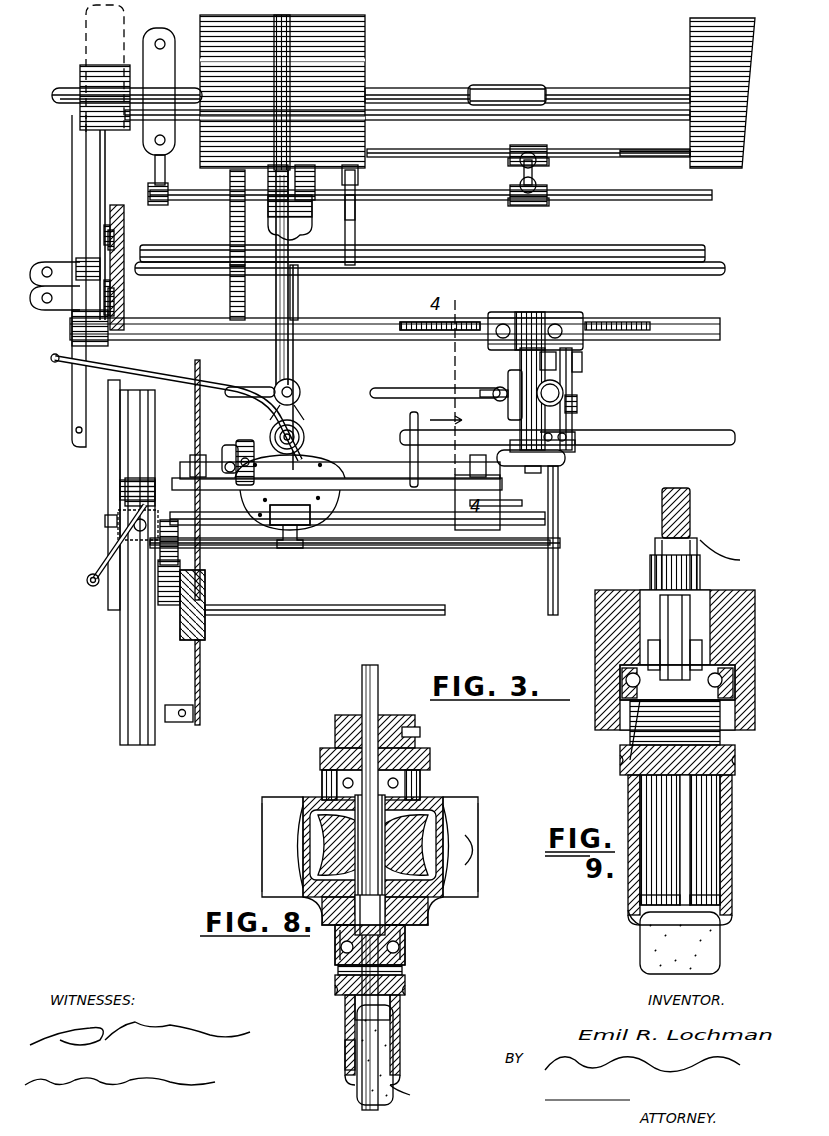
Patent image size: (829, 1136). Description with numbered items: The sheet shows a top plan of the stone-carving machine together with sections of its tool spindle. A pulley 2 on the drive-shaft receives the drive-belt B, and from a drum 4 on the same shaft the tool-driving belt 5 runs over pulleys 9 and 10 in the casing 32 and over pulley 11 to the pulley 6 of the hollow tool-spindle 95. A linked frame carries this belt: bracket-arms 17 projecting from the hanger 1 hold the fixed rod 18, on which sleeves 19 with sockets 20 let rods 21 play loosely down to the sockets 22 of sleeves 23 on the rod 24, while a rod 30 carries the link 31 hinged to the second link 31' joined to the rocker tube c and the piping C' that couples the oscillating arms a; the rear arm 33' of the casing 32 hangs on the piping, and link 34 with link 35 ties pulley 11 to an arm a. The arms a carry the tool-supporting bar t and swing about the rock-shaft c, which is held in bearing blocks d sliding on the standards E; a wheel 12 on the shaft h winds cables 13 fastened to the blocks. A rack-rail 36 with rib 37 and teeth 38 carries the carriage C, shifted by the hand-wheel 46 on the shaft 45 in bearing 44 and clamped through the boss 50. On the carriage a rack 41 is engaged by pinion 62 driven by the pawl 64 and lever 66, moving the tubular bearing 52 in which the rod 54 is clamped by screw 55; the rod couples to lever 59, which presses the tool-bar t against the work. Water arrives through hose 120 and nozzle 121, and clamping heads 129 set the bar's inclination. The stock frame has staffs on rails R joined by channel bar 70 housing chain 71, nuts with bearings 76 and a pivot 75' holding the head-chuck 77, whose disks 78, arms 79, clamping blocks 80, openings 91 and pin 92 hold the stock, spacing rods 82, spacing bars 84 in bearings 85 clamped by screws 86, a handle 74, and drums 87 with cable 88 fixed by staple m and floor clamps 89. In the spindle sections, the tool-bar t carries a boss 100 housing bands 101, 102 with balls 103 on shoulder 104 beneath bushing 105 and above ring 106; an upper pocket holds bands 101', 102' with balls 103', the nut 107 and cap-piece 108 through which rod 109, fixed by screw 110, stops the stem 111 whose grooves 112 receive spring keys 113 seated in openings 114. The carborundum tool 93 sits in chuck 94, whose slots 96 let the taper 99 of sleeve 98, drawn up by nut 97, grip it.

In FIG. 3, the drive-belt B is at (88, 30).
In FIG. 3, the pulley 2 is at (94, 77).
In FIG. 3, the hanger 1 is at (170, 45).
In FIG. 3, the drum 4 is at (360, 72).
In FIG. 3, the tool-driving belt (drive) 5 is at (290, 75).
In FIG. 8, the tool-driving belt (drive) 5 is at (318, 855).
In FIG. 3, the pulley 10 is at (275, 180).
In FIG. 3, the pulley 9 is at (305, 178).
In FIG. 3, the link 31 is at (371, 214).
In FIG. 3, the second link 31' is at (371, 207).
In FIG. 3, the casing 32 is at (305, 218).
In FIG. 3, the rear extension or arm 33' is at (240, 217).
In FIG. 3, the bracket-arm 17 is at (155, 175).
In FIG. 3, the supporting standard E is at (86, 193).
In FIG. 3, the bearing block d is at (117, 205).
In FIG. 3, the cable section 13 is at (108, 240).
In FIG. 3, the wheel 12 is at (95, 292).
In FIG. 3, the shaft S is at (410, 92).
In FIG. 3, the piping C' is at (507, 78).
In FIG. 3, the sleeve 23 is at (512, 147).
In FIG. 3, the rod 24 is at (528, 143).
In FIG. 3, the rod 30 is at (660, 145).
In FIG. 3, the socket 22 is at (512, 165).
In FIG. 3, the socket 20 is at (536, 180).
In FIG. 3, the sleeve 19 is at (512, 200).
In FIG. 3, the rod 21 is at (540, 202).
In FIG. 3, the rod 18 is at (615, 197).
In FIG. 3, the rocker tube or hollow shaft c is at (690, 248).
In FIG. 3, the shaft h is at (728, 268).
In FIG. 3, the oscillating arm a is at (230, 302).
In FIG. 3, the link 34 is at (298, 304).
In FIG. 3, the rib 37 is at (380, 330).
In FIG. 3, the teeth 38 is at (470, 322).
In FIG. 3, the bearing 44 is at (530, 322).
In FIG. 3, the carriage C is at (549, 317).
In FIG. 3, the rack-rail or bar 36 is at (163, 335).
In FIG. 3, the link 35 is at (265, 390).
In FIG. 3, the pulley 11 is at (300, 390).
In FIG. 3, the lever 66 is at (403, 388).
In FIG. 3, the pawl 64 is at (480, 392).
In FIG. 3, the pinion 62 is at (495, 385).
In FIG. 3, the hollow tubular bearing 52 is at (560, 360).
In FIG. 3, the boss or bearing 50 is at (585, 358).
In FIG. 3, the rod or plug 54 is at (560, 390).
In FIG. 3, the screw 55 is at (578, 407).
In FIG. 3, the rack 41 is at (518, 425).
In FIG. 3, the shaft 45 is at (560, 440).
In FIG. 3, the hand-wheel 46 is at (503, 466).
In FIG. 3, the tool-supporting bar t is at (680, 437).
In FIG. 8, the tool-supporting bar t is at (272, 835).
In FIG. 3, the lever 59 is at (558, 523).
In FIG. 3, the hose 120 is at (58, 362).
In FIG. 3, the cord or cable 88 is at (195, 408).
In FIG. 3, the clamping head 129 is at (222, 452).
In FIG. 3, the nozzle 121 is at (238, 445).
In FIG. 3, the adjustable rod 109 is at (340, 415).
In FIG. 8, the adjustable rod 109 is at (378, 672).
In FIG. 3, the clamping block 80 is at (286, 510).
In FIG. 3, the spacing rod 82 is at (410, 420).
In FIG. 3, the spacing bar 84 is at (112, 478).
In FIG. 3, the bearing 85 is at (105, 518).
In FIG. 3, the screw / shaft 86 is at (380, 605).
In FIG. 3, the lateral bearing 76 is at (128, 493).
In FIG. 3, the pivot 75' is at (115, 534).
In FIG. 3, the removable handle 74 is at (93, 587).
In FIG. 3, the inverted channel bar 70 is at (205, 550).
In FIG. 3, the plug or pin 92 is at (265, 540).
In FIG. 3, the radiating arm 79 is at (290, 525).
In FIG. 3, the spacing opening 91 is at (315, 510).
In FIG. 3, the disk 78 is at (335, 505).
In FIG. 3, the platform or head-chuck 77 is at (465, 540).
In FIG. 3, the sprocket-chain 71 is at (500, 506).
In FIG. 3, the drum or pulley 87 is at (207, 605).
In FIG. 3, the staple m is at (255, 615).
In FIG. 3, the clamp 89 is at (193, 715).
In FIG. 3, the rail R is at (128, 725).
In FIG. 9, the longitudinal groove 112 is at (665, 492).
In FIG. 8, the adjustable stem 111 is at (355, 810).
In FIG. 9, the adjustable stem 111 is at (685, 488).
In FIG. 8, the bushing 105 is at (385, 920).
In FIG. 9, the bushing 105 is at (655, 560).
In FIG. 8, the hollow tool-spindle 95 is at (440, 885).
In FIG. 9, the hollow tool-spindle 95 is at (700, 560).
In FIG. 8, the hollow boss 100 is at (410, 905).
In FIG. 9, the hollow boss 100 is at (745, 603).
In FIG. 9, the socket or opening 114 is at (725, 640).
In FIG. 9, the spring locking key 113 is at (625, 660).
In FIG. 8, the ball bearing 103 is at (340, 958).
In FIG. 9, the ball bearing 103 is at (672, 679).
In FIG. 8, the inner annular band 102 is at (396, 955).
In FIG. 9, the inner annular band 102 is at (707, 677).
In FIG. 8, the outer annular band 101 is at (397, 945).
In FIG. 9, the outer annular band 101 is at (707, 682).
In FIG. 8, the ring 106 is at (340, 975).
In FIG. 9, the ring 106 is at (735, 735).
In FIG. 9, the shoulder 104 is at (610, 730).
In FIG. 8, the clamping nut 97 is at (405, 995).
In FIG. 9, the clamping nut 97 is at (735, 762).
In FIG. 8, the sleeve 98 is at (400, 1055).
In FIG. 9, the sleeve 98 is at (732, 818).
In FIG. 8, the longitudinal slot 96 is at (390, 1030).
In FIG. 9, the longitudinal slot 96 is at (710, 880).
In FIG. 8, the socket or chuck 94 is at (348, 1050).
In FIG. 9, the socket or chuck 94 is at (640, 840).
In FIG. 8, the taper 99 is at (412, 1097).
In FIG. 9, the taper 99 is at (630, 915).
In FIG. 8, the carborundum tool 93 is at (357, 1100).
In FIG. 9, the carborundum tool 93 is at (650, 950).
In FIG. 8, the screw 110 is at (410, 728).
In FIG. 8, the cap-piece 108 is at (345, 745).
In FIG. 8, the nut 107 is at (440, 722).
In FIG. 8, the inner annular band 102' is at (399, 756).
In FIG. 8, the outer annular band 101' is at (395, 767).
In FIG. 8, the ball bearing 103' is at (341, 771).
In FIG. 8, the pulley 6 is at (422, 850).